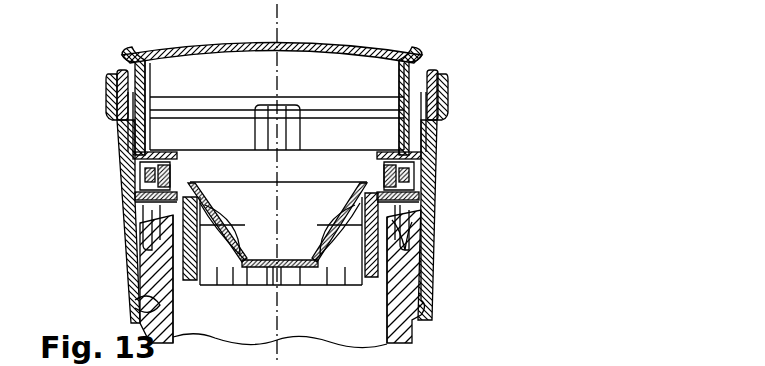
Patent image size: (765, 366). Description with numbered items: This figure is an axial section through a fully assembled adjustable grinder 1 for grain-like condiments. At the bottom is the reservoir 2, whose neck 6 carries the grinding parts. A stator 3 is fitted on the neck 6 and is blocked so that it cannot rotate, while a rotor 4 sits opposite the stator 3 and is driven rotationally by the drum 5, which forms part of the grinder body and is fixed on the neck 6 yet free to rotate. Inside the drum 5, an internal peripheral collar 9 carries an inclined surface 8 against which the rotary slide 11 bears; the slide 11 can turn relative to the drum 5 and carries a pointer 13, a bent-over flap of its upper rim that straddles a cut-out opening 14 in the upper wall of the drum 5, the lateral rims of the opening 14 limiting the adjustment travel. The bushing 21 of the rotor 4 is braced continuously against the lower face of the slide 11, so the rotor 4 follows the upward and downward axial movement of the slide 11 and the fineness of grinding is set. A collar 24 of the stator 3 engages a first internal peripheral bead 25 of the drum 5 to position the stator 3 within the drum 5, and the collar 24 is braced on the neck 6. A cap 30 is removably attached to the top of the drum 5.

The adjustable grinder 1 is at (82, 76).
The reservoir 2 is at (280, 281).
The stator 3 is at (333, 280).
The rotor 4 is at (301, 268).
The drum 5 is at (128, 260).
The neck 6 is at (150, 300).
The inclined surface 8 is at (140, 186).
The internal peripheral collar 9 is at (133, 155).
The rotary slide 11 is at (212, 128).
The pointer 13 is at (105, 96).
The cut-out opening 14 is at (113, 70).
The bushing 21 is at (135, 207).
The collar 24 is at (400, 236).
The first internal peripheral bead 25 is at (140, 228).
The cap 30 is at (296, 40).